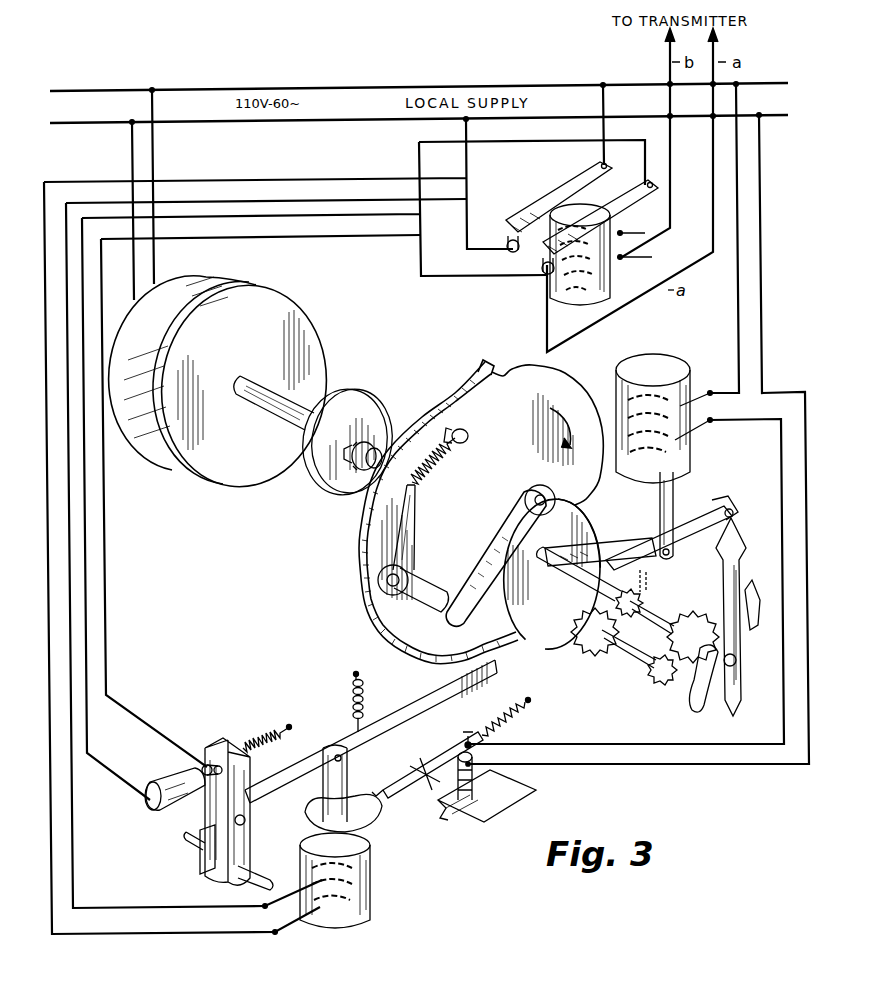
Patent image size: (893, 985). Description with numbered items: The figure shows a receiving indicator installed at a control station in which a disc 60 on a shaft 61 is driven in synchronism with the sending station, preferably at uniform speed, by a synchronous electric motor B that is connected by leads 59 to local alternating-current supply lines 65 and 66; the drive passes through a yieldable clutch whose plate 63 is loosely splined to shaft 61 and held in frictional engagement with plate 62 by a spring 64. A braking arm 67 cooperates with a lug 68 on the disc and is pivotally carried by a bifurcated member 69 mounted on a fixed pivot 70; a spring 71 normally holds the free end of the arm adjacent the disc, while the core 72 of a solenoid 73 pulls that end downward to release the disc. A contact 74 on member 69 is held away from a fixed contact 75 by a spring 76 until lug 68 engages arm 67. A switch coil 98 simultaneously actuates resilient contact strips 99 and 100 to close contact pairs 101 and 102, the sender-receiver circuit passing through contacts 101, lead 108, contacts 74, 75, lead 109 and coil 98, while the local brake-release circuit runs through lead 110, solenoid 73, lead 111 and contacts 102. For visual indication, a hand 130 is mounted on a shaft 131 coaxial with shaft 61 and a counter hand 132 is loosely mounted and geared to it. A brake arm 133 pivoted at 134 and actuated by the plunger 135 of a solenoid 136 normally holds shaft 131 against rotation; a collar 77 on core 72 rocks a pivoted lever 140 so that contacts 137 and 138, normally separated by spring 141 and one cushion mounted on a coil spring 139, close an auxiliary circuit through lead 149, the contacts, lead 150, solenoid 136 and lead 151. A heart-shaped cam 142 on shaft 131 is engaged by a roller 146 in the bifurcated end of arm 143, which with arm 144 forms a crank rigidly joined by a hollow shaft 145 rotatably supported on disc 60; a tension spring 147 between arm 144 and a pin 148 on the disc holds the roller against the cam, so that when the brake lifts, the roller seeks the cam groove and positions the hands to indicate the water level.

The supply line 65 is at (190, 90).
The supply line 66 is at (178, 122).
The leads 59 is at (156, 268).
The synchronous electric motor B is at (312, 332).
The shaft 61 is at (362, 482).
The clutch plate 62 is at (338, 396).
The clutch plate 63 is at (368, 408).
The spring 64 is at (374, 445).
The disc 60 is at (558, 384).
The lug 68 is at (482, 360).
The heart-shaped cam 142 is at (530, 638).
The crank arm 143 is at (492, 548).
The crank arm 144 is at (410, 536).
The hollow shaft 145 is at (392, 596).
The roller 146 is at (548, 486).
The tension spring 147 is at (450, 470).
The pin 148 is at (470, 436).
The solenoid 136 is at (670, 432).
The plunger 135 is at (656, 498).
The brake arm 133 is at (680, 520).
The pivot 134 is at (734, 508).
The shaft 131 is at (566, 560).
The hand 130 is at (740, 568).
The counter hand 132 is at (690, 712).
The braking arm 67 is at (458, 692).
The spring 71 is at (364, 694).
The core 72 is at (330, 796).
The collar 77 is at (314, 820).
The solenoid 73 is at (372, 884).
The pivoted lever 140 is at (428, 760).
The spring 141 is at (522, 710).
The contact 138 is at (472, 746).
The contact 137 is at (474, 766).
The coil spring 139 is at (492, 796).
The bifurcated member 69 is at (224, 876).
The fixed pivot 70 is at (196, 840).
The contact 74 is at (212, 752).
The fixed contact 75 is at (202, 768).
The spring 76 is at (262, 732).
The coil 98 is at (608, 280).
The contact strip 99 is at (604, 206).
The contact strip 100 is at (556, 192).
The contacts 101 is at (542, 266).
The contacts 102 is at (504, 244).
The lead 108 is at (346, 264).
The lead 109 is at (512, 144).
The lead 110 is at (290, 180).
The lead 111 is at (470, 216).
The lead 149 is at (760, 326).
The lead 150 is at (574, 744).
The lead 151 is at (734, 296).